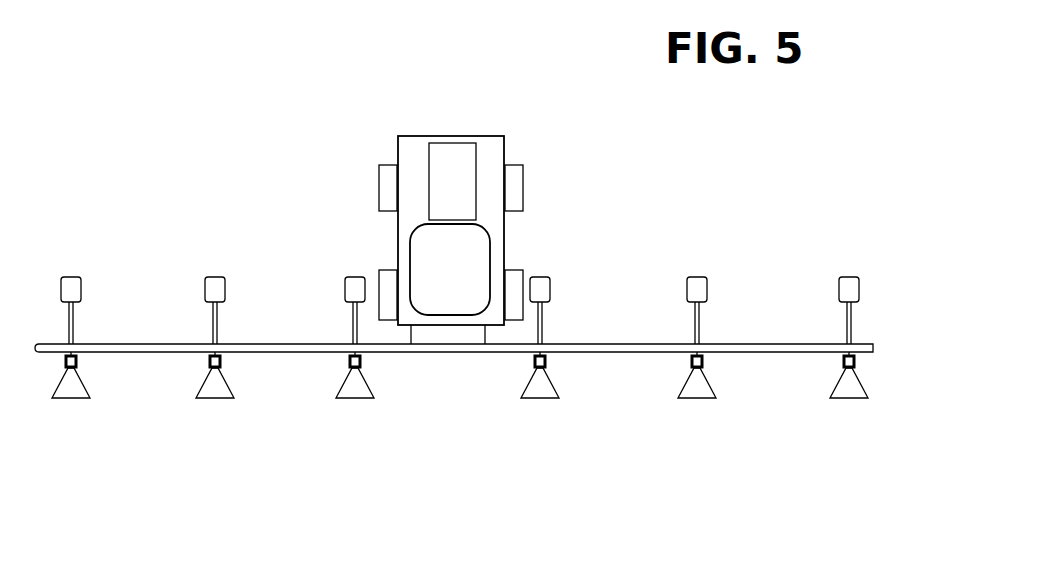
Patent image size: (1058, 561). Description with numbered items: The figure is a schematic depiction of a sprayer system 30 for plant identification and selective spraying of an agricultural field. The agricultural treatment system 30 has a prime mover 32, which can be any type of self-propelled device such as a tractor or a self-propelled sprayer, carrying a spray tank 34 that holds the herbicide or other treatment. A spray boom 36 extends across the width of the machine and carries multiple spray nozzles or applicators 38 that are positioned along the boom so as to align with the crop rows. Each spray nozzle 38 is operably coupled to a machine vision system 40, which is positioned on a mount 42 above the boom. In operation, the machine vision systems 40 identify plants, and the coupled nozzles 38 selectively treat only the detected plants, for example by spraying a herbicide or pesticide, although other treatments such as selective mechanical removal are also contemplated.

The sprayer system 30 is at (106, 152).
The prime mover 32 is at (490, 146).
The spray tank 34 is at (468, 258).
The spray boom 36 is at (294, 343).
The spray nozzles 38 is at (545, 389).
The machine vision system 40 is at (550, 287).
The mount 42 is at (694, 326).